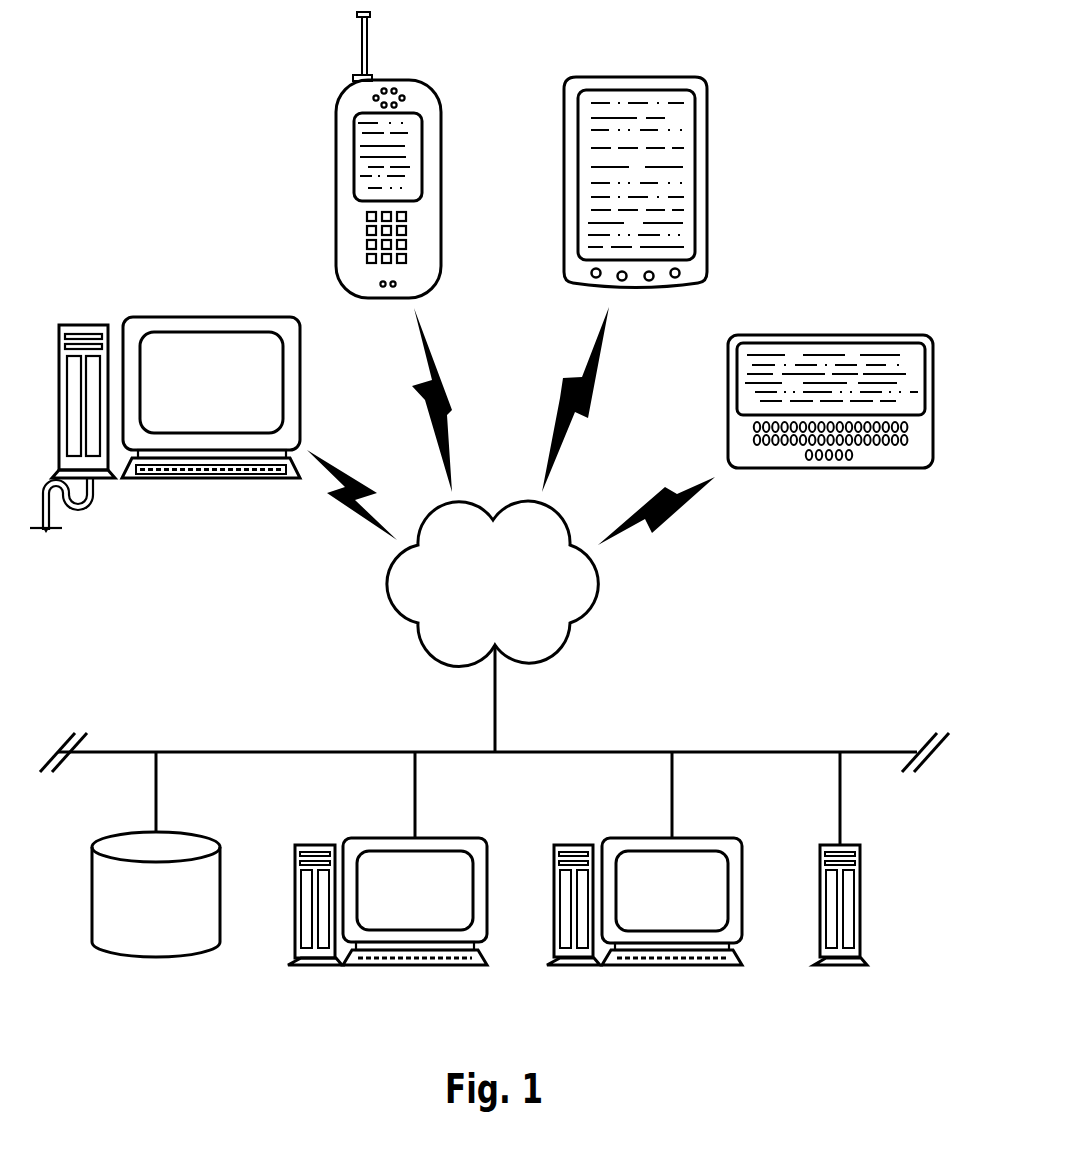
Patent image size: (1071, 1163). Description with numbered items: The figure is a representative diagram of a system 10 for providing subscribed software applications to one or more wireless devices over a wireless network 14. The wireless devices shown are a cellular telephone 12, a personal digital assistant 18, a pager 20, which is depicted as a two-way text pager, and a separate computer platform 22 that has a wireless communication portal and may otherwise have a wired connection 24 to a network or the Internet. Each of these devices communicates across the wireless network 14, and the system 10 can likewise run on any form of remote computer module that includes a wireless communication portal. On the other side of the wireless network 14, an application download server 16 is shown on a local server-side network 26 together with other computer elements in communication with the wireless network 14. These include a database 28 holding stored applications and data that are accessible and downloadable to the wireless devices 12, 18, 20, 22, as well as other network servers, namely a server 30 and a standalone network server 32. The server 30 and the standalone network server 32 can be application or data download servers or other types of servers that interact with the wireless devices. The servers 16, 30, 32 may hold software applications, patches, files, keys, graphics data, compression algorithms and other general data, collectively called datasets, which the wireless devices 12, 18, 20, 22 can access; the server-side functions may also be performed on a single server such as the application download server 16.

The system 10 is at (834, 162).
The cellular telephone 12 is at (420, 80).
The wireless network 14 is at (600, 583).
The application download server 16 is at (387, 838).
The personal digital assistant 18 is at (638, 77).
The pager 20 is at (866, 468).
The computer platform 22 is at (203, 317).
The wired connection 24 is at (102, 521).
The local server-side network 26 is at (720, 752).
The database 28 is at (92, 892).
The server 30 is at (655, 838).
The standalone network server 32 is at (860, 878).